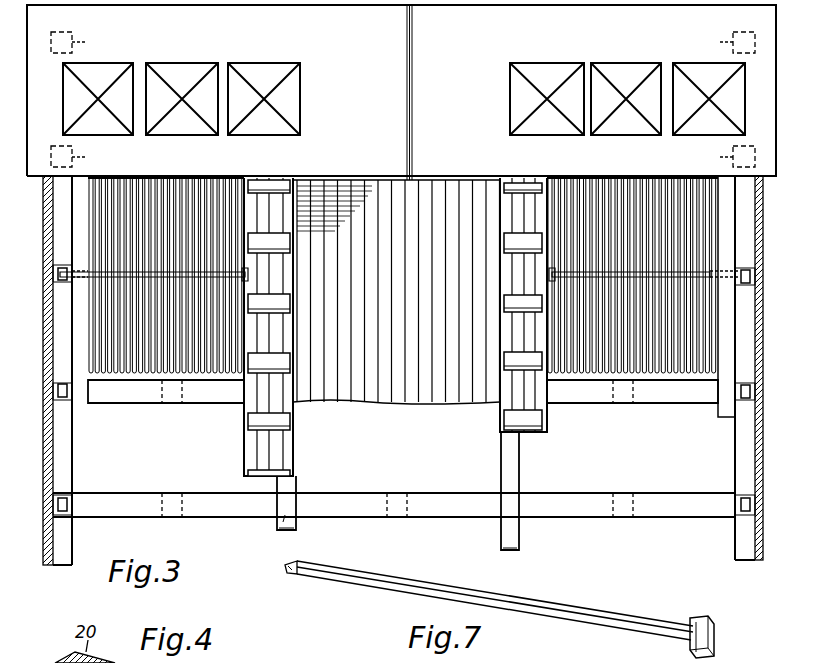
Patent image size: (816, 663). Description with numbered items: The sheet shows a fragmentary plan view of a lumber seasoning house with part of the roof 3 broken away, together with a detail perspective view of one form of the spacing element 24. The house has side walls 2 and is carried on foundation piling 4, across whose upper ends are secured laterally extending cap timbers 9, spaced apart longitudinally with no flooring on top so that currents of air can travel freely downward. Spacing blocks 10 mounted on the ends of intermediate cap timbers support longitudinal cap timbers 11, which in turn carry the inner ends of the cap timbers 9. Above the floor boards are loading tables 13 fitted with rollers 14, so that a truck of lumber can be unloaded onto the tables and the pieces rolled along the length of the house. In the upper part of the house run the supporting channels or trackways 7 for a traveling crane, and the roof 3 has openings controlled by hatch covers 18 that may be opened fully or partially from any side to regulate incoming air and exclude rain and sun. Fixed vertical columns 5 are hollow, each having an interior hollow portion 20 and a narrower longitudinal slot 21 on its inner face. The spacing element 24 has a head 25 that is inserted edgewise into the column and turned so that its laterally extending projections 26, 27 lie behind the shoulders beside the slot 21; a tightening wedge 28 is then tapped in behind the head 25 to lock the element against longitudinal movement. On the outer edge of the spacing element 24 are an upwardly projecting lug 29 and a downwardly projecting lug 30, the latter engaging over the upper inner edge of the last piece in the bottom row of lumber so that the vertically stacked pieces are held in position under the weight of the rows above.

In FIG. 3, the side walls 2 is at (43, 462).
In FIG. 3, the roof 3 is at (401, 92).
In FIG. 3, the foundation piling 4 is at (175, 405).
In FIG. 3, the fixed vertical columns 5 is at (80, 45).
In FIG. 3, the supporting channels or trackways 7 is at (83, 192).
In FIG. 3, the cap timbers 9 is at (124, 493).
In FIG. 3, the spacing blocks 10 is at (282, 508).
In FIG. 3, the longitudinal cap timbers 11 is at (290, 482).
In FIG. 3, the loading tables 13 is at (518, 215).
In FIG. 3, the rollers 14 is at (277, 240).
In FIG. 3, the hatch covers 18 is at (242, 64).
In FIG. 3, the interior hollow portion 20 is at (58, 390).
In FIG. 3, the longitudinal slot 21 is at (75, 402).
In FIG. 3, the spacing element 24 is at (90, 277).
In FIG. 7, the spacing element 24 is at (412, 585).
In FIG. 3, the head 25 is at (757, 275).
In FIG. 7, the head 25 is at (292, 564).
In FIG. 7, the laterally extending projection 26 is at (305, 562).
In FIG. 7, the laterally extending projection 27 is at (290, 575).
In FIG. 3, the tightening wedge 28 is at (62, 278).
In FIG. 7, the upwardly projecting lug 29 is at (708, 624).
In FIG. 7, the downwardly projecting lug 30 is at (716, 642).